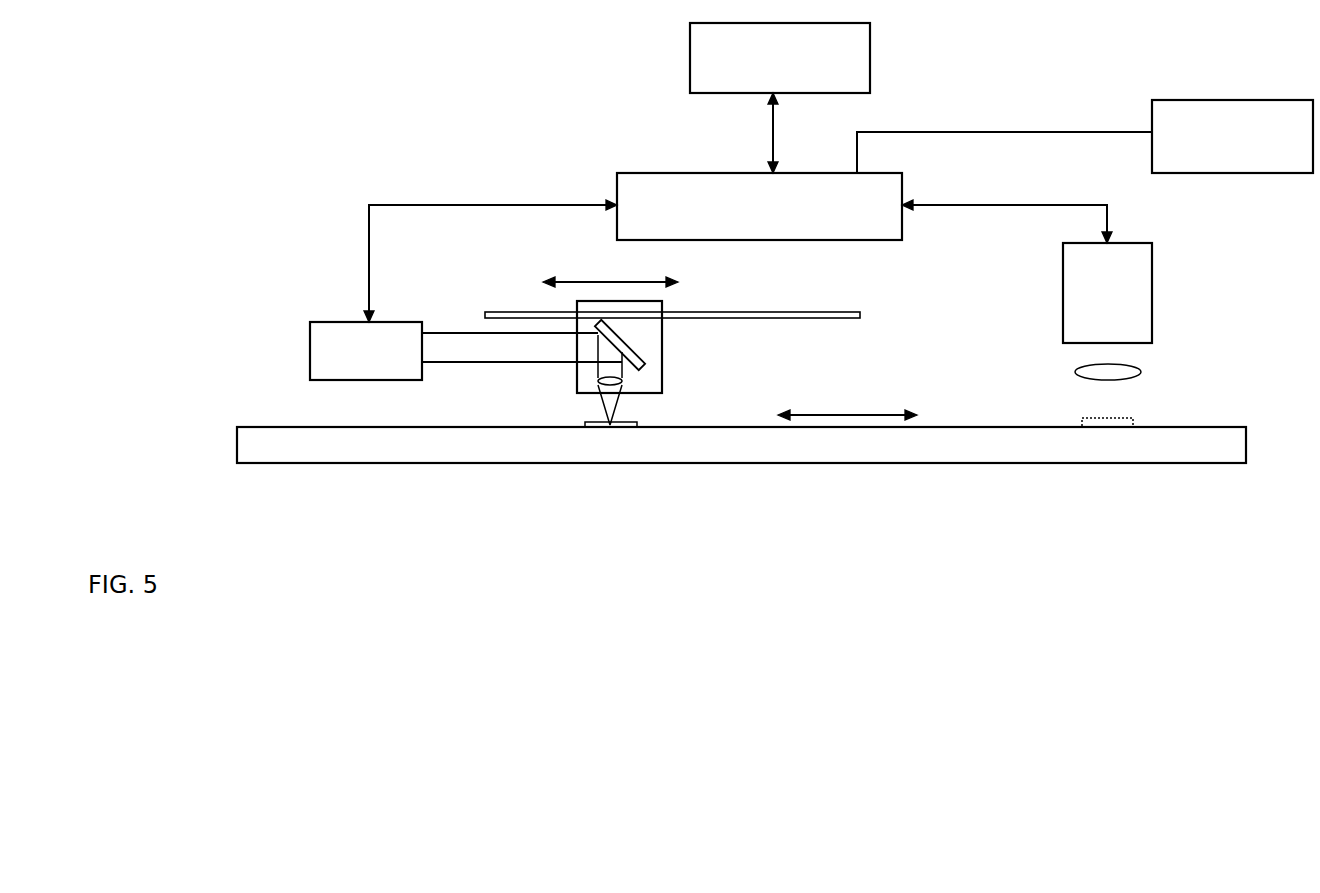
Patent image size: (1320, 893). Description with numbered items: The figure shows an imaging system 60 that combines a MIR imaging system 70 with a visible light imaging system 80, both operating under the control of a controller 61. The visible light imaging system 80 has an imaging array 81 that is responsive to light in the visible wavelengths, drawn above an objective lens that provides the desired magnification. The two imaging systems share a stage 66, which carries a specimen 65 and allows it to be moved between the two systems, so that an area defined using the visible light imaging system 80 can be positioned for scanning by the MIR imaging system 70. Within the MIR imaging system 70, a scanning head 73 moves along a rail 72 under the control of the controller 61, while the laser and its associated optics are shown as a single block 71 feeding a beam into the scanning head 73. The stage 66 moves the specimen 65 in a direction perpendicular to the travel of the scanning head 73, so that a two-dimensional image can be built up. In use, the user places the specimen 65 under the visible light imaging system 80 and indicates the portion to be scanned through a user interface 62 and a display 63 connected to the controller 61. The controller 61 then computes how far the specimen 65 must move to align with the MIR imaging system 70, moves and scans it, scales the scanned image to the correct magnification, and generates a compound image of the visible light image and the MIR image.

The imaging system 60 is at (284, 109).
The controller 61 is at (660, 172).
The user interface 62 is at (870, 61).
The display 63 is at (1256, 102).
The specimen 65 is at (637, 422).
The stage 66 is at (238, 447).
The MIR imaging system 70 is at (470, 488).
The single block representing laser and associated optics 71 is at (323, 330).
The rail 72 is at (770, 313).
The scanning head 73 is at (663, 345).
The visible light imaging system 80 is at (940, 488).
The imaging array 81 is at (1152, 293).